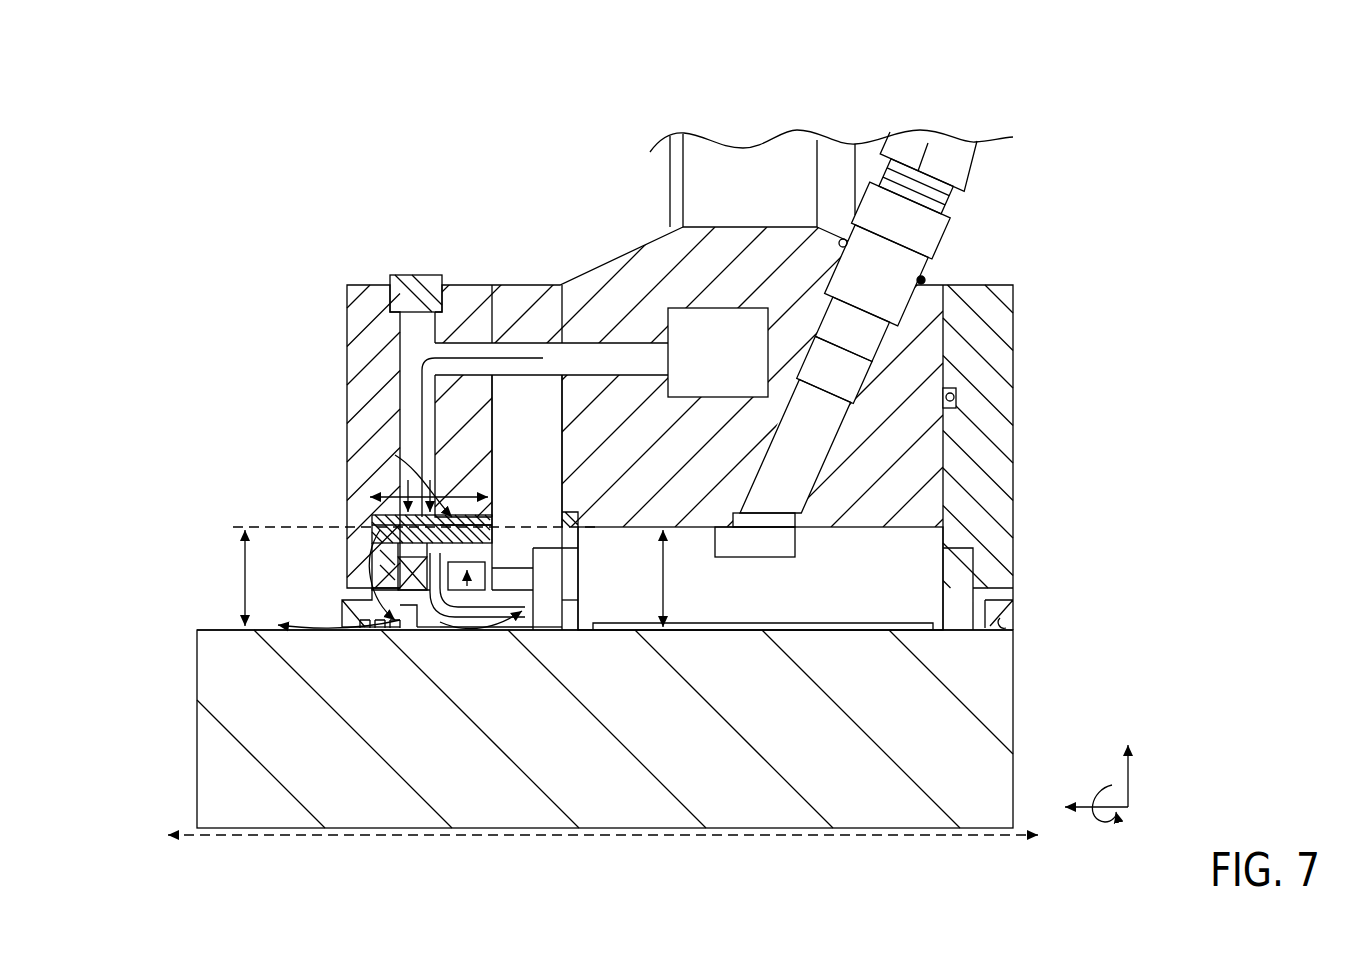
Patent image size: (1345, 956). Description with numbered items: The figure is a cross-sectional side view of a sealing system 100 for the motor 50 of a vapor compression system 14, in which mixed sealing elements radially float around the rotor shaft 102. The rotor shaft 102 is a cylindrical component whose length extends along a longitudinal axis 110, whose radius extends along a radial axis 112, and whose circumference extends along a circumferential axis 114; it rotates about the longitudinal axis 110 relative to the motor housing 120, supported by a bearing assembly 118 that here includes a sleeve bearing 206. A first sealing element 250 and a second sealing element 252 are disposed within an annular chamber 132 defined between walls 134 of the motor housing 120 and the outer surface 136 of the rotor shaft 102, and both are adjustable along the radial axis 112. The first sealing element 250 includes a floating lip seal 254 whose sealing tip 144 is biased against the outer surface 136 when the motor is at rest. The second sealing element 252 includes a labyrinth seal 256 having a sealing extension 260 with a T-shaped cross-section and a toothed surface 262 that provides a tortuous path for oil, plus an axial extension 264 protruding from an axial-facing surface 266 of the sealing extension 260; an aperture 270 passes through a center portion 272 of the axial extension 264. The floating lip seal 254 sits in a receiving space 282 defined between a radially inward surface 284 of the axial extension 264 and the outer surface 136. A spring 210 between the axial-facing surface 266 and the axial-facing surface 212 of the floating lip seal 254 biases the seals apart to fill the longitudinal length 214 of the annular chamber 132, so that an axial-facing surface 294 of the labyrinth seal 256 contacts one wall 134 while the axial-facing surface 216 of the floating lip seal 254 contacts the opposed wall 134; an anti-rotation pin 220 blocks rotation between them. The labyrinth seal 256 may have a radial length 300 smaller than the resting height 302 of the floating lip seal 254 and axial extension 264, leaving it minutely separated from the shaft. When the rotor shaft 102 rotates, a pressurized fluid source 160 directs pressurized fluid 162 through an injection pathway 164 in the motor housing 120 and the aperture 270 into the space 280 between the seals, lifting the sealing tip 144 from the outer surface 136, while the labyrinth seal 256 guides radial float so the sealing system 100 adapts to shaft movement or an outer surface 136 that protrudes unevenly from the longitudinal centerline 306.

The vapor compression system 14 is at (745, 105).
The motor 50 is at (622, 116).
The sealing system 100 is at (490, 240).
The rotor shaft 102 is at (379, 810).
The longitudinal axis 110 is at (1120, 792).
The radial axis 112 is at (1132, 780).
The circumferential axis 114 is at (1100, 832).
The bearing assembly 118 is at (762, 665).
The motor housing 120 is at (1020, 398).
The annular chamber 132 is at (497, 618).
The walls 134 is at (492, 530).
The outer surface 136 is at (262, 627).
The sealing tip 144 is at (503, 633).
The pressurized fluid source 160 is at (735, 365).
The pressurized fluid 162 is at (517, 356).
The injection pathway 164 is at (584, 350).
The sleeve bearing 206 is at (842, 600).
The spring 210 is at (405, 560).
The axial-facing surface 212 is at (571, 632).
The longitudinal length 214 is at (395, 512).
The axial-facing surface 216 is at (582, 598).
The anti-rotation pin 220 is at (578, 542).
The first sealing element 250 is at (450, 639).
The second sealing element 252 is at (383, 641).
The floating lip seal 254 is at (486, 637).
The labyrinth seal 256 is at (347, 642).
The sealing extension 260 is at (342, 603).
The toothed surface 262 is at (350, 641).
The axial extension 264 is at (455, 522).
The axial-facing surface 266 is at (400, 540).
The aperture 270 is at (440, 500).
The center portion 272 is at (405, 518).
The space 280 is at (367, 503).
The receiving space 282 is at (540, 632).
The radially inward surface 284 is at (566, 562).
The axial-facing surface 294 is at (345, 523).
The radial length 300 is at (243, 570).
The resting height 302 is at (668, 590).
The longitudinal centerline 306 is at (600, 838).